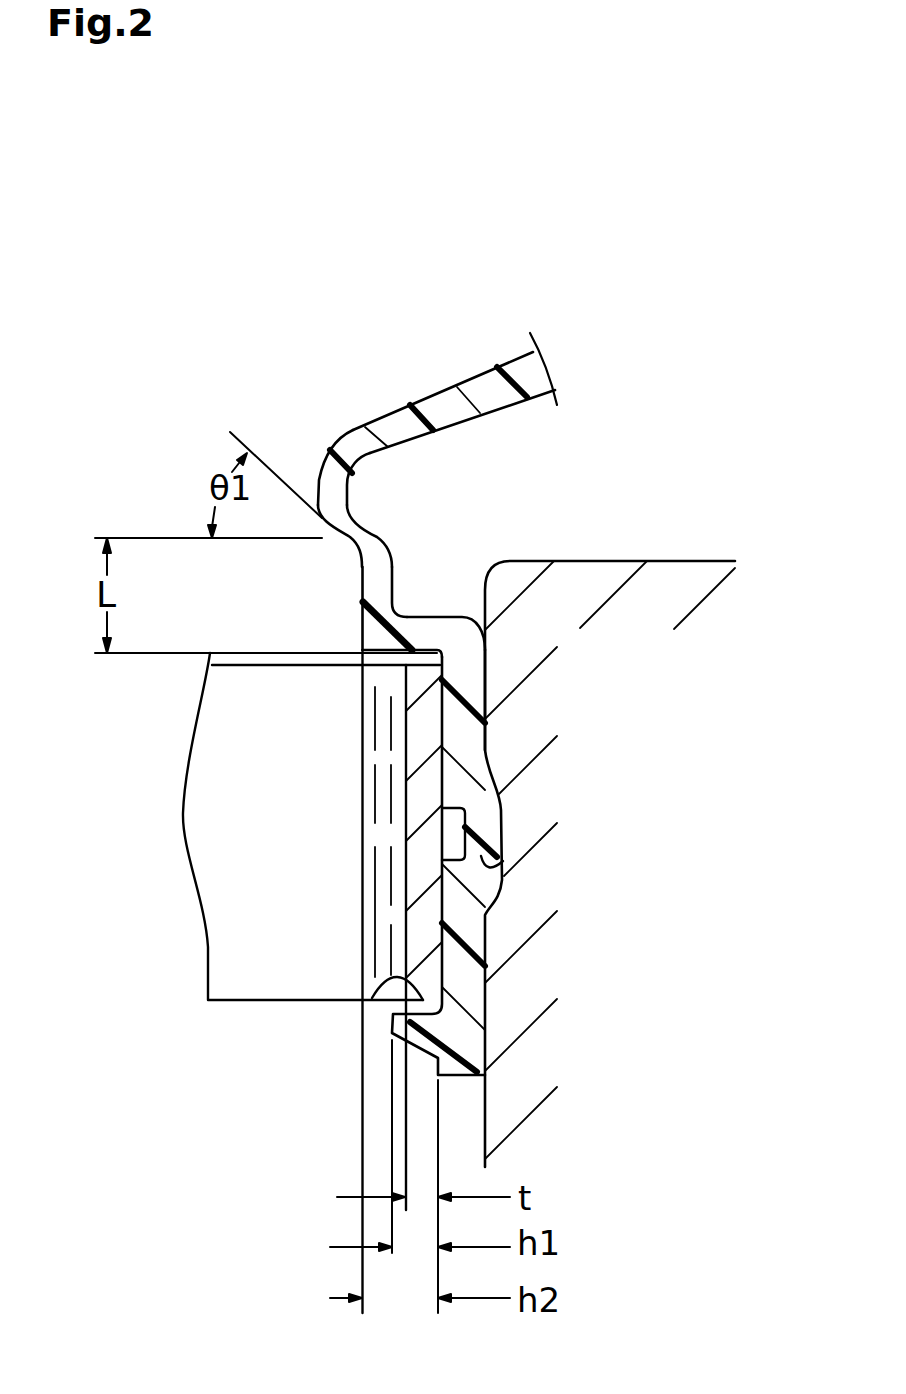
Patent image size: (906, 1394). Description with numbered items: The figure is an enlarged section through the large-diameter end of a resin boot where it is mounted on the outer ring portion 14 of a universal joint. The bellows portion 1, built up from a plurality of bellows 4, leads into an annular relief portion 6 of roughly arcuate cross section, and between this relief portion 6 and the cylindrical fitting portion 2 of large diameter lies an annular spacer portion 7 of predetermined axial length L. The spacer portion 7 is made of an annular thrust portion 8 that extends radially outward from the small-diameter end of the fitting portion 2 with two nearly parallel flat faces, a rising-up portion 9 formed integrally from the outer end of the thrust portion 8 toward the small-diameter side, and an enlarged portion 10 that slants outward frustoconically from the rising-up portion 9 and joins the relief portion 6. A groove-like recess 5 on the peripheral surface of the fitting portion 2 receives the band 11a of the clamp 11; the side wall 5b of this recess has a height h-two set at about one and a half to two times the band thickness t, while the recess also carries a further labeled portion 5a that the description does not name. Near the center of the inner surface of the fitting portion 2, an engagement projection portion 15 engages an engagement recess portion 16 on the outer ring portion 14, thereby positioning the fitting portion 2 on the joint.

The bellows portion 1 is at (371, 612).
The annular fitting portion of large diameter 2 is at (462, 985).
The bellows 4 is at (440, 407).
The groove-like recess 5 is at (233, 981).
The lower seal lip 5a is at (372, 998).
The side wall 5b is at (387, 656).
The annular relief portion 6 is at (332, 477).
The annular spacer portion 7 is at (347, 595).
The thrust portion 8 is at (377, 583).
The rising-up portion 9 is at (418, 637).
The enlarged portion 10 is at (350, 536).
The clamp 11 is at (423, 915).
The band 11a is at (423, 838).
The outer ring portion 14 is at (653, 587).
The engagement projection portion 15 is at (490, 830).
The engagement recess portion 16 is at (488, 878).